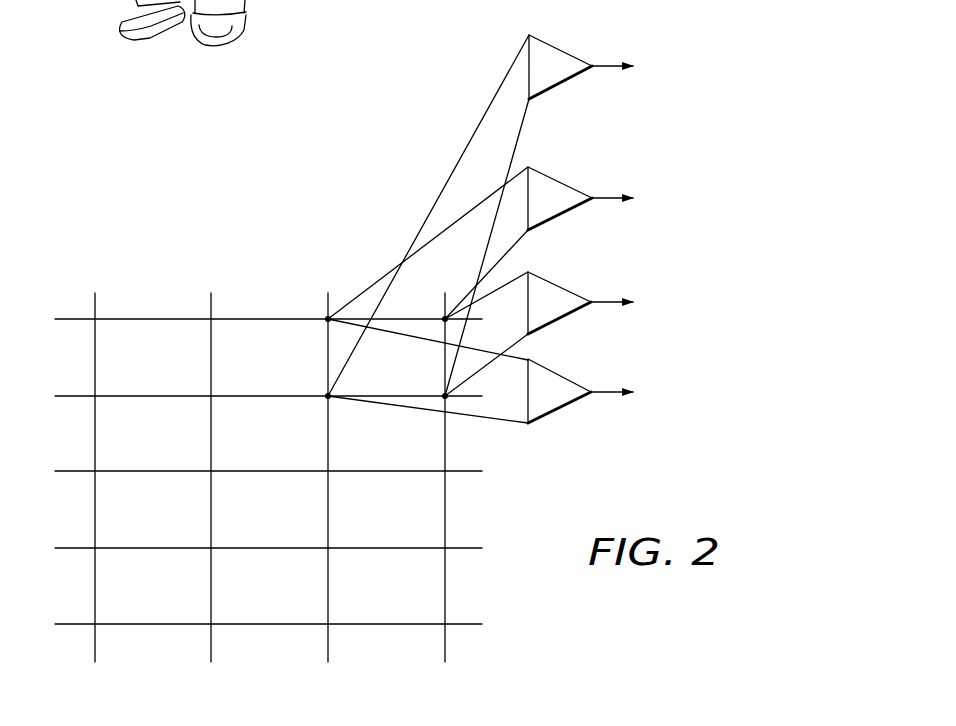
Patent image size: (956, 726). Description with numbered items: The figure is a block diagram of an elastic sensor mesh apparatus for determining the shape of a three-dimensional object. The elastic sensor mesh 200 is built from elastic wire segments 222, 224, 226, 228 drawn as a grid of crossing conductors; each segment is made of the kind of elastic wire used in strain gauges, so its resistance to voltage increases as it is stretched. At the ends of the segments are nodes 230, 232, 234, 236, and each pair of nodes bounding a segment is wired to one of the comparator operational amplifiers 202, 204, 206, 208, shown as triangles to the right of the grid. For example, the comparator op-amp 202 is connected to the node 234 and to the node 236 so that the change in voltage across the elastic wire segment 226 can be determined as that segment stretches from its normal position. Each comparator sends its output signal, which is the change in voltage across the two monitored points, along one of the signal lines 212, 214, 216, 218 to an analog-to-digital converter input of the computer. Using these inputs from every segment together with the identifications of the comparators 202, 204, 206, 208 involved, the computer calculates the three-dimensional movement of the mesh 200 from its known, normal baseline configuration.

The elastic sensor mesh 200 is at (283, 186).
The comparator operational amplifier 202 is at (562, 86).
The comparator operational amplifier 204 is at (562, 216).
The comparator operational amplifier 206 is at (562, 320).
The comparator operational amplifier 208 is at (562, 410).
The signal line 212 is at (602, 64).
The signal line 214 is at (602, 196).
The signal line 216 is at (606, 301).
The signal line 218 is at (606, 394).
The elastic wire segment 222 is at (327, 354).
The elastic wire segment 224 is at (396, 322).
The elastic wire segment 226 is at (367, 399).
The elastic wire segment 228 is at (441, 368).
The node 230 is at (327, 318).
The node 232 is at (444, 318).
The node 234 is at (327, 397).
The node 236 is at (443, 398).